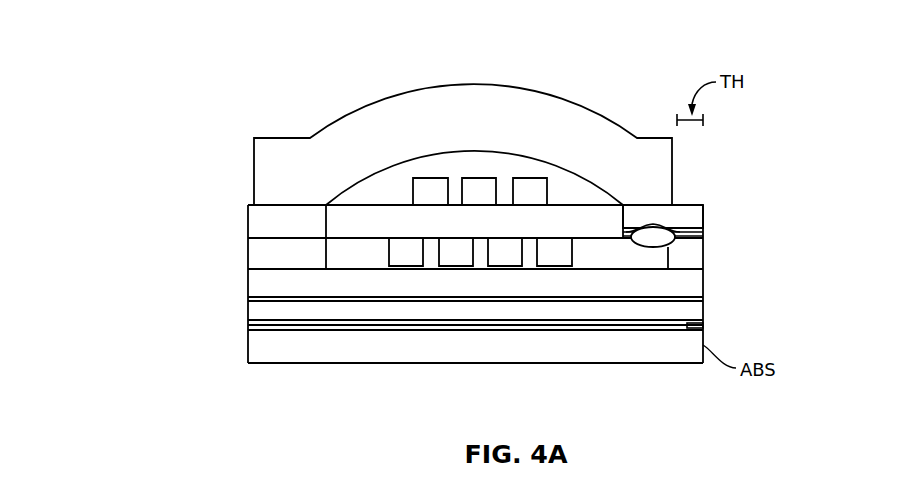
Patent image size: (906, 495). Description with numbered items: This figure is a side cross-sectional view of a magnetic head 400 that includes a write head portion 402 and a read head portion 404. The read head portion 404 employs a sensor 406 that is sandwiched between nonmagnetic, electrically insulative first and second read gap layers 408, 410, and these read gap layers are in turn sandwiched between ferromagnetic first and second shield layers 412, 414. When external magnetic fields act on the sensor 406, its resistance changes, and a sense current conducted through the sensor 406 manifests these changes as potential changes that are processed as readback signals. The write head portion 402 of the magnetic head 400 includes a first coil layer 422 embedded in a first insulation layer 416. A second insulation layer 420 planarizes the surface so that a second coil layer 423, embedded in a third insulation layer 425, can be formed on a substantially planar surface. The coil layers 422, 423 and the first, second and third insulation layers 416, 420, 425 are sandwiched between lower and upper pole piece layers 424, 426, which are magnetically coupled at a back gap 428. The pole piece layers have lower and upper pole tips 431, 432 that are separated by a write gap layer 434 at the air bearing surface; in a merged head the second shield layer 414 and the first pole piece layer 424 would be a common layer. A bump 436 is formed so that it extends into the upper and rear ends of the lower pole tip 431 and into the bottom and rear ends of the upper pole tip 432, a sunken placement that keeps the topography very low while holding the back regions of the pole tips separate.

The magnetic head 400 is at (348, 40).
The write head portion 402 is at (160, 288).
The read head portion 404 is at (205, 260).
The sensor 406 is at (703, 328).
The first read gap layer 408 is at (390, 332).
The second read gap layer 410 is at (362, 322).
The first shield layer 412 is at (648, 364).
The second shield layer 414 is at (703, 307).
The first insulation layer 416 is at (348, 264).
The second insulation layer 420 is at (570, 212).
The first coil layer 422 is at (453, 266).
The second coil layer 423 is at (420, 178).
The lower pole piece layer 424 is at (703, 283).
The third insulation layer 425 is at (483, 160).
The upper pole piece layer 426 is at (672, 160).
The back gap 428 is at (228, 230).
The lower pole tip 431 is at (703, 258).
The upper pole tip 432 is at (703, 219).
The write gap layer 434 is at (703, 235).
The bump 436 is at (652, 226).